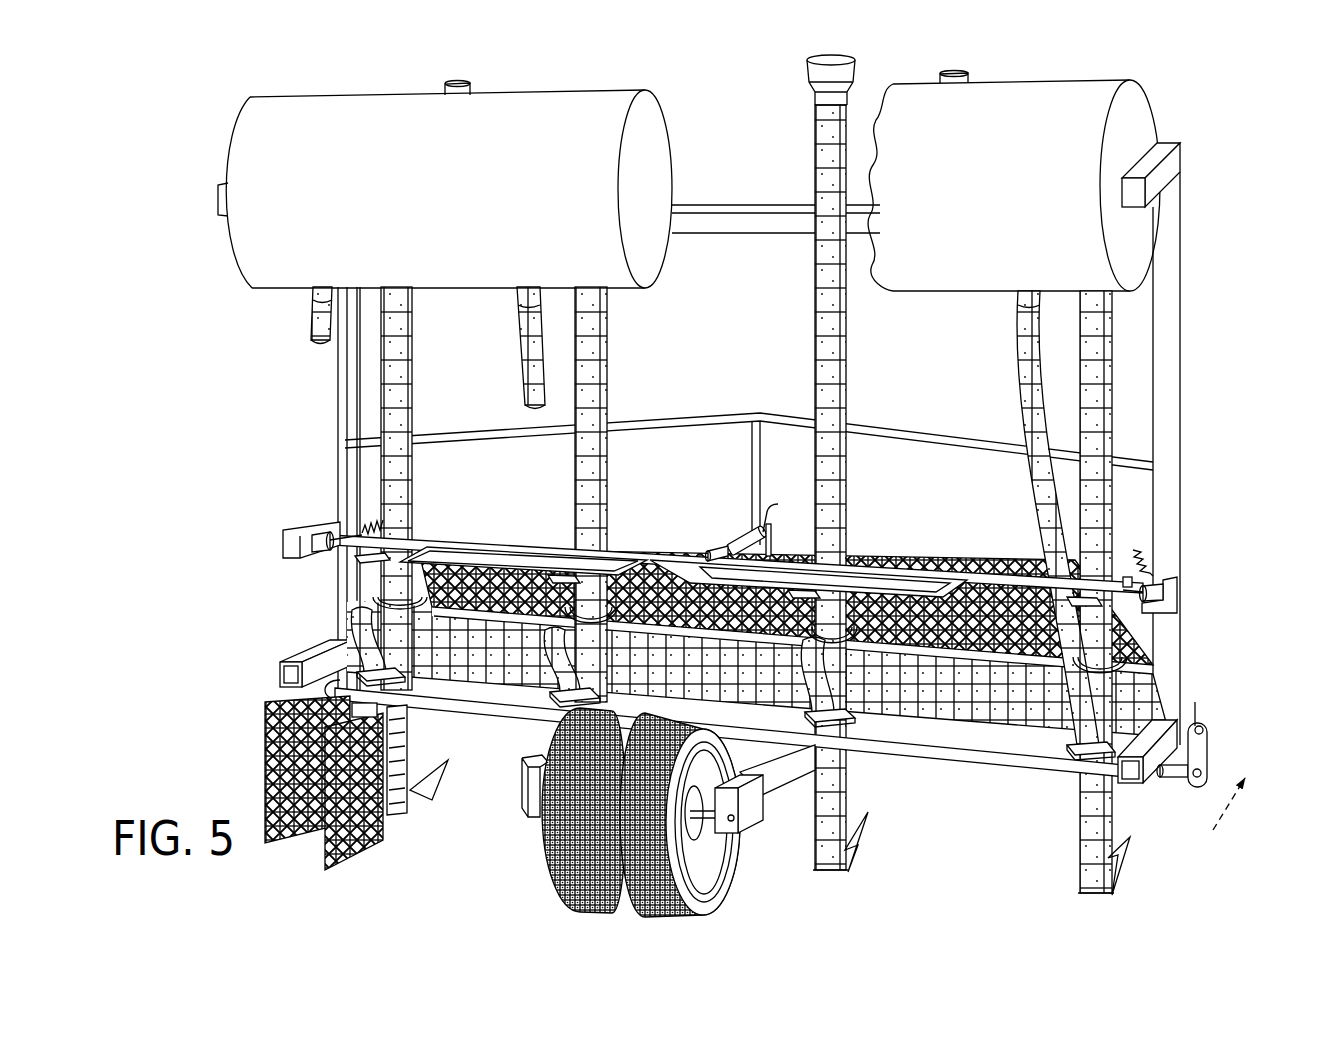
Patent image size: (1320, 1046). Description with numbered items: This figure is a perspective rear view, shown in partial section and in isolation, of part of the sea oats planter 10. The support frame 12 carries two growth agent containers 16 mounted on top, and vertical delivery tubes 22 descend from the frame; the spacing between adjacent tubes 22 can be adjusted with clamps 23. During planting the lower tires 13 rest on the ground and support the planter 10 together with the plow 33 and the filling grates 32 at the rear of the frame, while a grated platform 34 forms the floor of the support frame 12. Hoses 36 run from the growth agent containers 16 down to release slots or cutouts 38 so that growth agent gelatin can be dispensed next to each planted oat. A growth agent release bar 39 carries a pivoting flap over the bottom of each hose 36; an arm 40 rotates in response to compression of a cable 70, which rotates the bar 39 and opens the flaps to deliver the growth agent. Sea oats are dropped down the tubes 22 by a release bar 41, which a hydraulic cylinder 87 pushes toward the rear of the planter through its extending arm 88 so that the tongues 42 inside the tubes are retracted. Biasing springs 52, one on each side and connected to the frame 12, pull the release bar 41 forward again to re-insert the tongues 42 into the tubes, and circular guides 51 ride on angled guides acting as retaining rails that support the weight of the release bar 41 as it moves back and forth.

The sea oats planter 10 is at (185, 352).
The support frame 12 is at (335, 418).
The lower tires 13 is at (568, 880).
The growth agent containers 16 is at (443, 213).
The delivery tubes 22 is at (812, 140).
The clamps 23 is at (410, 610).
The filling grates 32 is at (268, 712).
The plow 33 is at (422, 782).
The grated platform 34 is at (926, 546).
The hoses 36 is at (528, 382).
The release slot or cutouts 38 is at (1088, 870).
The growth agent release bar 39 is at (487, 700).
The arm 40 is at (1205, 760).
The release bar 41 is at (500, 535).
The tongues 42 is at (370, 560).
The circular guides 51 is at (318, 535).
The biasing spring 52 is at (375, 520).
The cable 70 is at (1203, 722).
The hydraulic cylinder 87 is at (745, 530).
The arm 88 is at (712, 548).